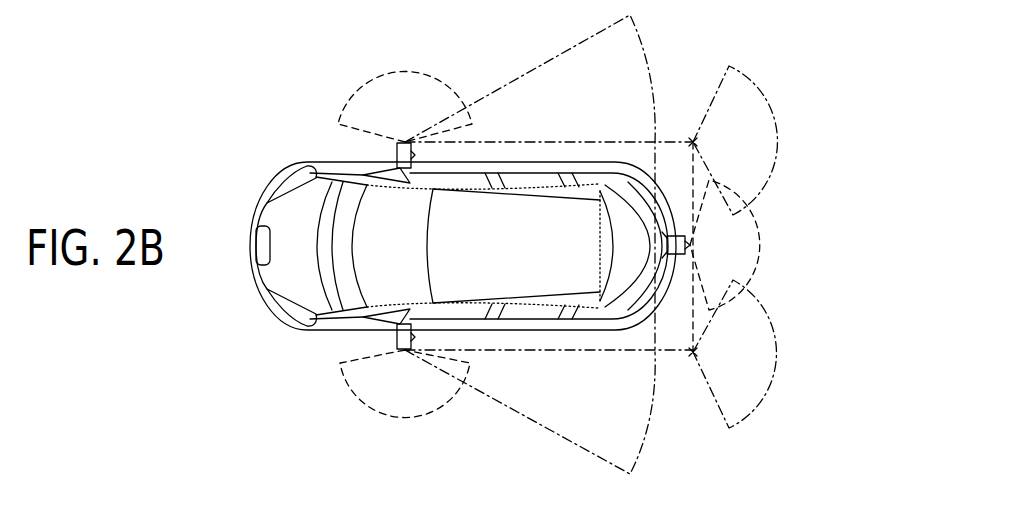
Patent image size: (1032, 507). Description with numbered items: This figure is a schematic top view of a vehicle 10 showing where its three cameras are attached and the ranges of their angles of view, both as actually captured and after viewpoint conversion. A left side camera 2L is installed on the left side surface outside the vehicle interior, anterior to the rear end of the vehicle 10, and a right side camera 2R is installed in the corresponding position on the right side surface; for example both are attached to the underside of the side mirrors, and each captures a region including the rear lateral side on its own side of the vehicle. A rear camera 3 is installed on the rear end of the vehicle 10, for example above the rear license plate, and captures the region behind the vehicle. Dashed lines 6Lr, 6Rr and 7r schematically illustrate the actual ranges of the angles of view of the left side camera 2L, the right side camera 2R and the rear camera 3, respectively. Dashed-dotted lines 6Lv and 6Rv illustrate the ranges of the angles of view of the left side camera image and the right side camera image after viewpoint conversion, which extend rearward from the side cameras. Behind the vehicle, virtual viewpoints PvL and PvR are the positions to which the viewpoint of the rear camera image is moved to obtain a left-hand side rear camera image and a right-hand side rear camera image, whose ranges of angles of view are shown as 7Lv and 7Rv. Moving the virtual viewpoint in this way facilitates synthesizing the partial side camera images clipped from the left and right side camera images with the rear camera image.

The vehicle 10 is at (252, 207).
The right side camera 2R is at (397, 167).
The left side camera 2L is at (397, 325).
The rear camera 3 is at (673, 256).
The range of angle of view of right side camera image after viewpoint conversion 6Rv is at (494, 87).
The range of angle of view of left side camera image after viewpoint conversion 6Lv is at (500, 407).
The range of angle of view of right side camera 6Rr is at (410, 74).
The range of angle of view of left side camera 6Lr is at (409, 416).
The range of angle of view of right-hand side rear camera image 7Rv is at (775, 120).
The range of angle of view of left-hand side rear camera image 7Lv is at (775, 372).
The range of angle of view of rear camera 7r is at (760, 254).
The virtual viewpoint of right-hand side rear camera image PvR is at (693, 142).
The virtual viewpoint of left-hand side rear camera image PvL is at (693, 353).